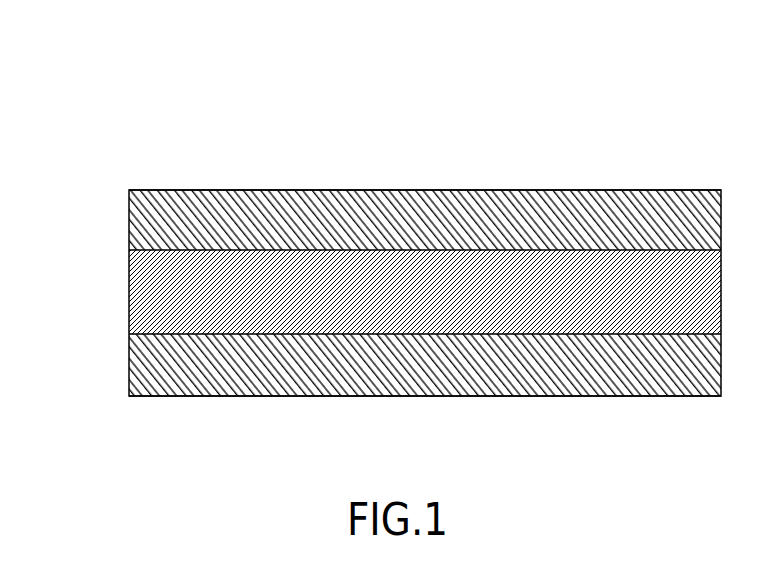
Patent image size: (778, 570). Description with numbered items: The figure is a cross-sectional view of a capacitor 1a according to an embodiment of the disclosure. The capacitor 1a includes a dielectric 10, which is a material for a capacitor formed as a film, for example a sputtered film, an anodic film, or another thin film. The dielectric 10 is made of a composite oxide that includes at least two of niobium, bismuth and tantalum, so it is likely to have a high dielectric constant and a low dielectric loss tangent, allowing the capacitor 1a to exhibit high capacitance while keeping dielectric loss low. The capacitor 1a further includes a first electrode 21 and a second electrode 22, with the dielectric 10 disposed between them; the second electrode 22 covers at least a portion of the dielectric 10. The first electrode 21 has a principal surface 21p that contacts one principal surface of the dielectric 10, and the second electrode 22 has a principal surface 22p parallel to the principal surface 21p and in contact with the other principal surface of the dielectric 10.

The capacitor 1a is at (693, 116).
The dielectric 10 is at (129, 286).
The first electrode 21 is at (129, 364).
The second electrode 22 is at (129, 224).
The principal surface 21p is at (293, 330).
The principal surface 22p is at (312, 258).